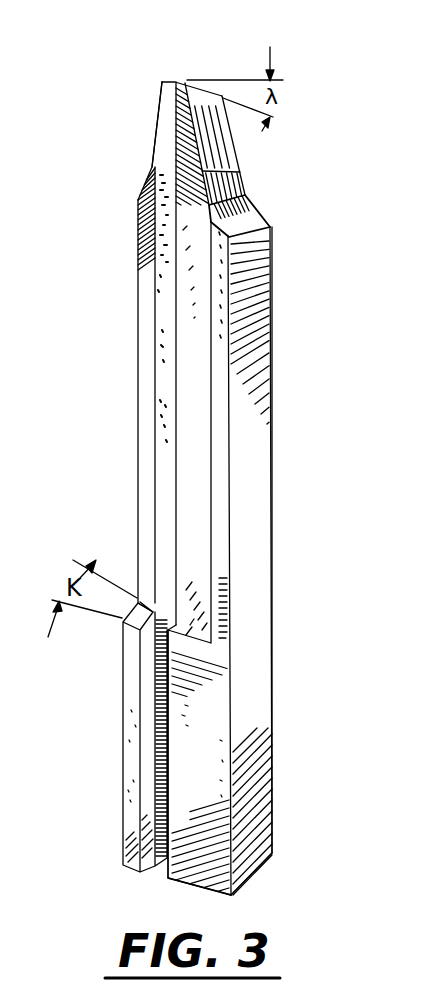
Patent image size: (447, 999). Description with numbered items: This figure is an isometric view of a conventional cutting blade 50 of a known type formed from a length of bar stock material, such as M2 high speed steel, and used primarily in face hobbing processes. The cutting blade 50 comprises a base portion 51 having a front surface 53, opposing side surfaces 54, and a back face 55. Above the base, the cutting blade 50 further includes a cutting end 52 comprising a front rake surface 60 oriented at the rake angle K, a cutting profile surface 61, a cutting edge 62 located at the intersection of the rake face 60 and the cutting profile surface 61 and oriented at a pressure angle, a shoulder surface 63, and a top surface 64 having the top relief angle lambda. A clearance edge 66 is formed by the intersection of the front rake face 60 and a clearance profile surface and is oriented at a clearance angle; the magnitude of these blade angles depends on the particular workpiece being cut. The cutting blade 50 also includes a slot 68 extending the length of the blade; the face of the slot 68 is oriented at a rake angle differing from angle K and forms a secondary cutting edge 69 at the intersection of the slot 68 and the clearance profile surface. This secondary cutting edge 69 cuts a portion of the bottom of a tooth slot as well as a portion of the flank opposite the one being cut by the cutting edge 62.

The cutting blade 50 is at (118, 510).
The base portion 51 is at (278, 678).
The cutting end 52 is at (122, 340).
The front surface 53 is at (133, 740).
The side surfaces 54 is at (255, 507).
The back face 55 is at (272, 802).
The front rake surface 60 is at (143, 428).
The cutting profile surface 61 is at (215, 150).
The cutting edge 62 is at (204, 171).
The shoulder surface 63 is at (247, 208).
The top surface 64 is at (174, 82).
The clearance edge 66 is at (148, 190).
The slot 68 is at (158, 241).
The secondary cutting edge 69 is at (163, 90).